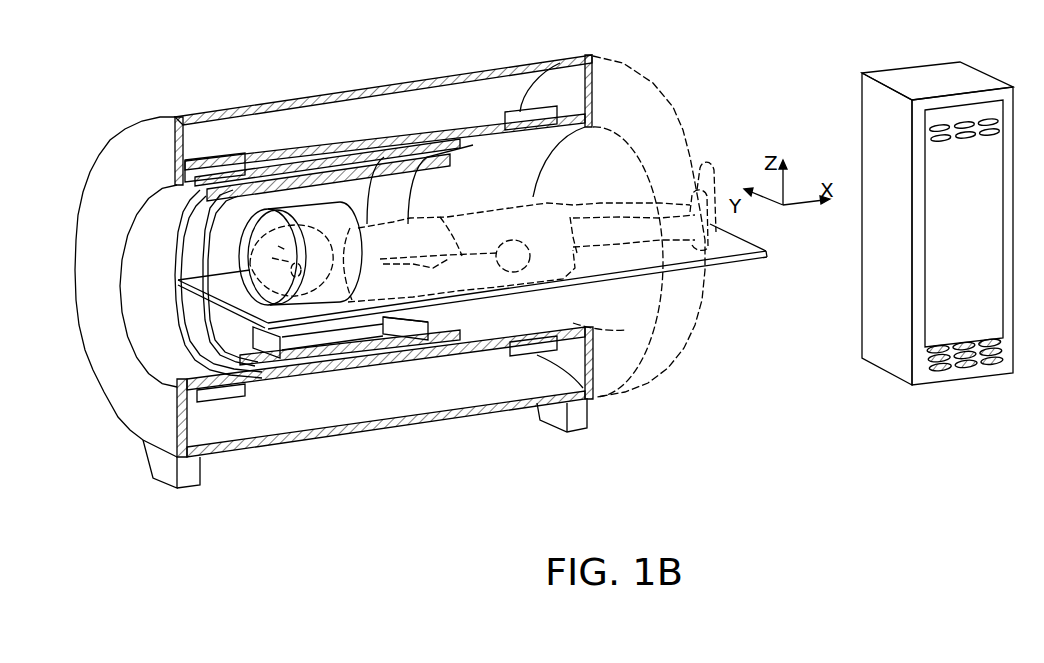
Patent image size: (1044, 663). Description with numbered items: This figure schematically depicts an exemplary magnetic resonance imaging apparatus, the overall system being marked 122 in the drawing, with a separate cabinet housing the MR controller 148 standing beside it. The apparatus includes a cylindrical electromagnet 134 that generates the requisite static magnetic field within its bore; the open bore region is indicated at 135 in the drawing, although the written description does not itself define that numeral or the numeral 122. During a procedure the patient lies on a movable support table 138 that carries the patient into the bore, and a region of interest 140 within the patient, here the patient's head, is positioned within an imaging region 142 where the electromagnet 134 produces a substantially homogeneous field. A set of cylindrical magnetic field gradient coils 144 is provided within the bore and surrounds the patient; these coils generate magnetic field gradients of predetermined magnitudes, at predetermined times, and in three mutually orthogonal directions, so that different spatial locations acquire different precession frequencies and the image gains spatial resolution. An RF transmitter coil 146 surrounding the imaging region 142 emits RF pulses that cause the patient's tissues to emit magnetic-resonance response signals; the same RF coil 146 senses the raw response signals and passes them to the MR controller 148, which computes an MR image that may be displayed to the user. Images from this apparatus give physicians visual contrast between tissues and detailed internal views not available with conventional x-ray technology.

The magnetic resonance imaging system 122 is at (566, 485).
The cylindrical electromagnet 134 is at (385, 140).
The bore 135 is at (617, 300).
The movable support table 138 is at (737, 258).
The region of interest 140 is at (255, 262).
The imaging region 142 is at (293, 203).
The magnetic field gradient coils 144 is at (478, 148).
The RF transmitter coil 146 is at (237, 340).
The MR controller 148 is at (873, 358).